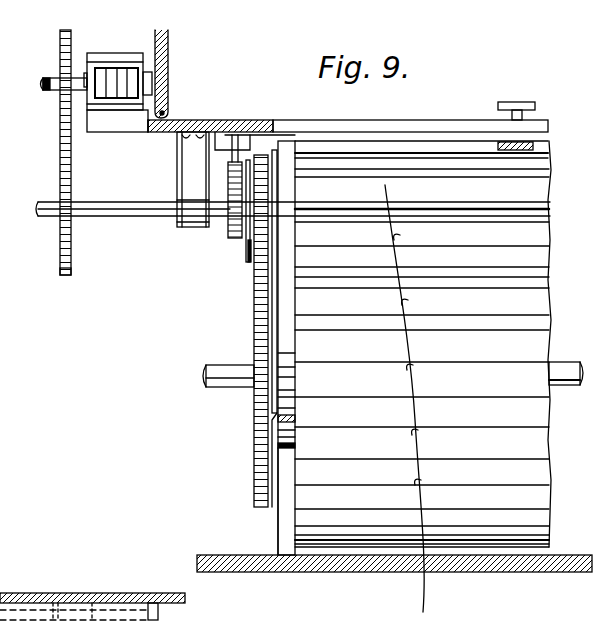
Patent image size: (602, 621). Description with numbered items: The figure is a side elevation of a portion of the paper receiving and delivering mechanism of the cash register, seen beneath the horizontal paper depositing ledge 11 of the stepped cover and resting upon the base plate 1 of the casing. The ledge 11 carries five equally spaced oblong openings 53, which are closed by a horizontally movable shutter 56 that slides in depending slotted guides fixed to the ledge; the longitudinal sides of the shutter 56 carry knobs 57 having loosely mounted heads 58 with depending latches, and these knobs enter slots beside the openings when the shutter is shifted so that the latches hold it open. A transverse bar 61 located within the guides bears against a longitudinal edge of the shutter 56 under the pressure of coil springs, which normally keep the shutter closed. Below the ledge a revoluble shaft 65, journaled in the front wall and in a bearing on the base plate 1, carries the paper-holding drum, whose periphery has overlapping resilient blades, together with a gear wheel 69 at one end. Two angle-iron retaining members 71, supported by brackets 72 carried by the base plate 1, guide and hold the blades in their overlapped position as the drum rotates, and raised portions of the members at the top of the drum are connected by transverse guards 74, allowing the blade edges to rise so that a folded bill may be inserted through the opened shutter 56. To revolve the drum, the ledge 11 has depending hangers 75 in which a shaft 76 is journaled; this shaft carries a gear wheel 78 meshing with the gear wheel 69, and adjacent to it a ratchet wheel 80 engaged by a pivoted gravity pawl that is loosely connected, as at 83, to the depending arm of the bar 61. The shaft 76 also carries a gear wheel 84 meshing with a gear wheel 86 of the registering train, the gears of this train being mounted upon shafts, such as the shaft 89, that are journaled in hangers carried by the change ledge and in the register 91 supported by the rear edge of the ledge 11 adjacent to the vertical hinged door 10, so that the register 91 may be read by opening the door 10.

The base plate 1 is at (489, 572).
The vertical hinged door 10 is at (165, 98).
The horizontal paper depositing ledge 11 is at (198, 120).
The oblong openings 53 is at (323, 124).
The shutter 56 is at (384, 139).
The knobs 57 is at (523, 122).
The heads 58 is at (536, 104).
The transverse bar 61 is at (90, 594).
The revoluble shaft 65 is at (216, 388).
The gear wheel 69 is at (256, 313).
The retaining members 71 is at (262, 336).
The brackets 72 is at (288, 512).
The transverse guards 74 is at (398, 165).
The depending hangers 75 is at (188, 160).
The shaft 76 is at (136, 216).
The gear wheel 78 is at (247, 266).
The ratchet wheel 80 is at (232, 237).
The loose connection 83 is at (2, 592).
The gear wheel 84 is at (72, 272).
The gear wheel 86 is at (62, 58).
The shaft 89 is at (48, 90).
The register 91 is at (168, 58).